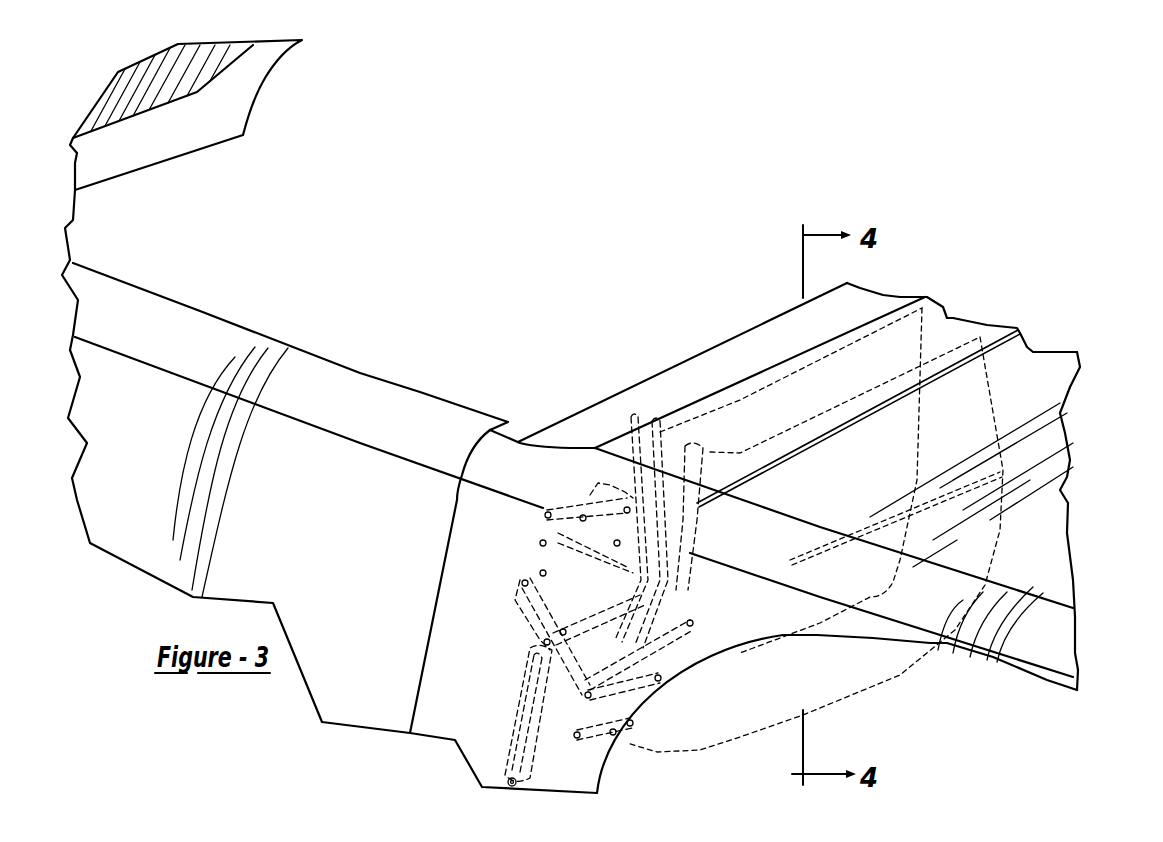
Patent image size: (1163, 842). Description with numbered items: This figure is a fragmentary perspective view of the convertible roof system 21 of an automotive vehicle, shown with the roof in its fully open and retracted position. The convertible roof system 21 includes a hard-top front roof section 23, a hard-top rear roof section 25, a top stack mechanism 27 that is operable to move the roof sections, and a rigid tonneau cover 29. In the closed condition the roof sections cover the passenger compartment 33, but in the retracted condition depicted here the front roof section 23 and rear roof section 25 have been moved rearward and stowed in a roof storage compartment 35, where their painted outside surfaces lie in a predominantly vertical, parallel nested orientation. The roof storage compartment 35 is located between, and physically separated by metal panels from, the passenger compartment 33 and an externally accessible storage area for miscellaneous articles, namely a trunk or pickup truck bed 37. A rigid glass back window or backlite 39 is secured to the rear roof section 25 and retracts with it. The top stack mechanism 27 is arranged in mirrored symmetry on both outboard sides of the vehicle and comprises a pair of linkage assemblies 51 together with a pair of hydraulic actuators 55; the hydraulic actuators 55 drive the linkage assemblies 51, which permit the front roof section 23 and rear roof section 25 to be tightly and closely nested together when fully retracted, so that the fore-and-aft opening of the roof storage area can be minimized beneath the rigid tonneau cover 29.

The convertible roof system 21 is at (517, 263).
The hard-top front roof section 23 is at (812, 383).
The hard-top rear roof section 25 is at (997, 412).
The top stack mechanism 27 is at (507, 546).
The rigid tonneau cover 29 is at (947, 327).
The passenger compartment 33 is at (418, 222).
The roof storage compartment 35 is at (586, 760).
The trunk or pickup truck bed 37 is at (1041, 562).
The backlite 39 is at (837, 675).
The linkage assemblies 51 is at (495, 583).
The hydraulic actuators 55 is at (513, 725).